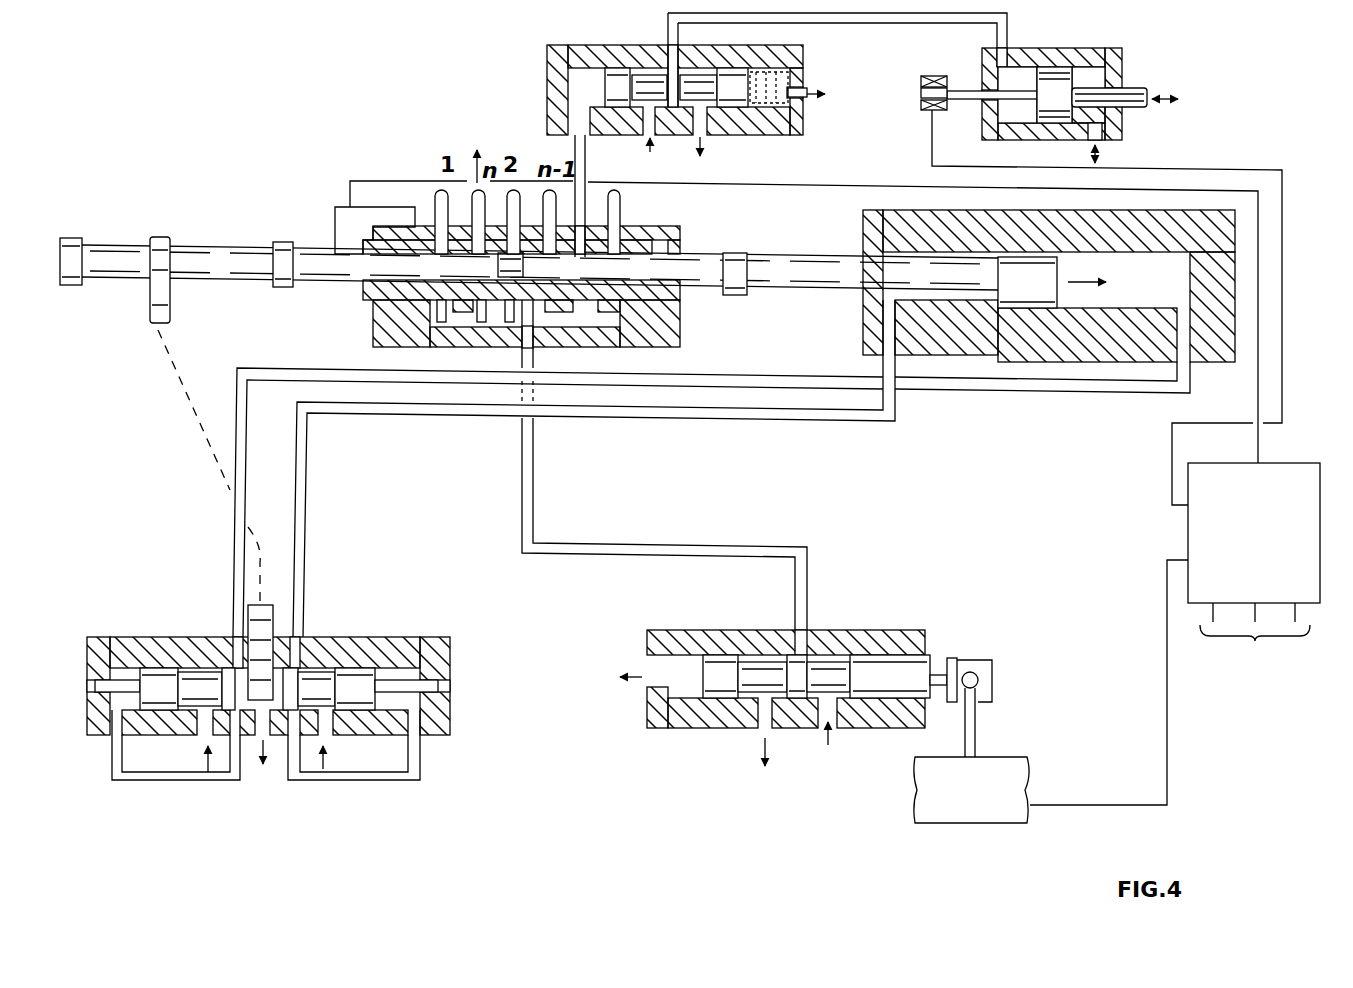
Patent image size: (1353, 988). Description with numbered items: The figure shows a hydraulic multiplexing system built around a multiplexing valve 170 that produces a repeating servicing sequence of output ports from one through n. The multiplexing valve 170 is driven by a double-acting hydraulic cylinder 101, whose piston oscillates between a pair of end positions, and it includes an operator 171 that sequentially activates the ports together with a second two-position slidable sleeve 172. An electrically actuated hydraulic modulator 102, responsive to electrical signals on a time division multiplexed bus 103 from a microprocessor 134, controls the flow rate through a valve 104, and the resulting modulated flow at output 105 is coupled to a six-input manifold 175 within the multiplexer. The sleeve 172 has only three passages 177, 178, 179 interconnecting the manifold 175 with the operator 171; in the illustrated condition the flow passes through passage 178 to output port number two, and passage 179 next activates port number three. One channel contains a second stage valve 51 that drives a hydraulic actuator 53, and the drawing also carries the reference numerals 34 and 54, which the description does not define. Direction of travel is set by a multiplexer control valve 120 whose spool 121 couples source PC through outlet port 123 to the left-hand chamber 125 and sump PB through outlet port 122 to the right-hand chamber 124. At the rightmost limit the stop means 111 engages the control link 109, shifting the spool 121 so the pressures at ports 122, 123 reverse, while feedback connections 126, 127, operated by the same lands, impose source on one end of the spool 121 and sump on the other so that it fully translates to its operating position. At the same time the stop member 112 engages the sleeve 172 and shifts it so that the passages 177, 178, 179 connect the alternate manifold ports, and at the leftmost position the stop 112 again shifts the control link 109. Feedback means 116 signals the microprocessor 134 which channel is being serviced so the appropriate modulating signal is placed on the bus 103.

The pilot pressure line 34 is at (598, 196).
The second stage valve 51 is at (794, 137).
The hydraulic actuator 53 is at (1086, 56).
The position transducer 54 is at (938, 76).
The double-acting hydraulic cylinder 101 is at (1070, 357).
The electrically actuated hydraulic modulator 102 is at (824, 685).
The time division multiplexed bus 103 is at (1167, 729).
The valve 104 is at (915, 640).
The modulator output 105 is at (803, 640).
The control link 109 is at (168, 298).
The stop means 111 is at (74, 240).
The stop member 112 is at (280, 290).
The feedback means 116 is at (342, 206).
The multiplexer control valve 120 is at (638, 591).
The spool 121 is at (372, 655).
The outlet port 122 is at (240, 637).
The outlet port 123 is at (300, 640).
The right-hand chamber 124 is at (1170, 291).
The left-hand chamber 125 is at (900, 297).
The left-hand feedback passage 126 is at (176, 781).
The right-hand feedback passage 127 is at (355, 781).
The microprocessor 134 is at (1284, 463).
The multiplexing valve 170 is at (370, 318).
The operator 171 is at (320, 258).
The slidable sleeve 172 is at (632, 247).
The manifold 175 is at (510, 322).
The sleeve passage 177 is at (438, 322).
The sleeve passage 178 is at (480, 322).
The sleeve passage 179 is at (573, 322).